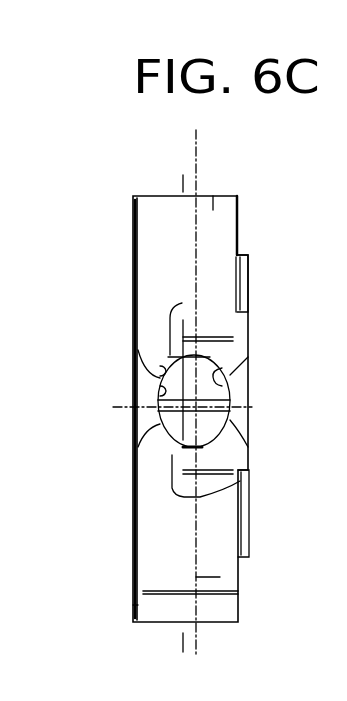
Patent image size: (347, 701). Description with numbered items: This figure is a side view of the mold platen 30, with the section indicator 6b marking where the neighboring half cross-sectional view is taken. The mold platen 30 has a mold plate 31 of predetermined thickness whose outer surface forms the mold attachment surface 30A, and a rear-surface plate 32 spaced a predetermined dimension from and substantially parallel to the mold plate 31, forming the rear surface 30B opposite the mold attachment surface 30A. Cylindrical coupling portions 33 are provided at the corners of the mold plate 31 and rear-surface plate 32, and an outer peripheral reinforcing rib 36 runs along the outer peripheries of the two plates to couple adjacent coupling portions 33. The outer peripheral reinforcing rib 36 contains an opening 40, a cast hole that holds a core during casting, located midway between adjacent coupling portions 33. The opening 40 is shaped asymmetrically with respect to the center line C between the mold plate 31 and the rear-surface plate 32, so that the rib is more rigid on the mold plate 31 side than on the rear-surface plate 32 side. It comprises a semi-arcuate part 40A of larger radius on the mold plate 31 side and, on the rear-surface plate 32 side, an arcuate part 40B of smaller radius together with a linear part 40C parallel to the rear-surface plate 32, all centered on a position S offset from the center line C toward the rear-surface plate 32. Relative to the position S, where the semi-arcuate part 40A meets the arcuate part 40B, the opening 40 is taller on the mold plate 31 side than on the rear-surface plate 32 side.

The mold platen 30 is at (196, 168).
The mold attachment surface 30A is at (249, 268).
The rear surface 30B is at (133, 250).
The mold plate 31 is at (249, 316).
The rear-surface plate 32 is at (133, 308).
The coupling portion 33 is at (216, 196).
The outer peripheral reinforcing rib 36 is at (249, 483).
The opening 40 is at (228, 440).
The semi-arcuate part 40A is at (230, 375).
The arcuate part 40B is at (160, 372).
The linear part 40C is at (160, 383).
The position S is at (133, 463).
The center line C is at (249, 557).
The section line 6b is at (180, 183).